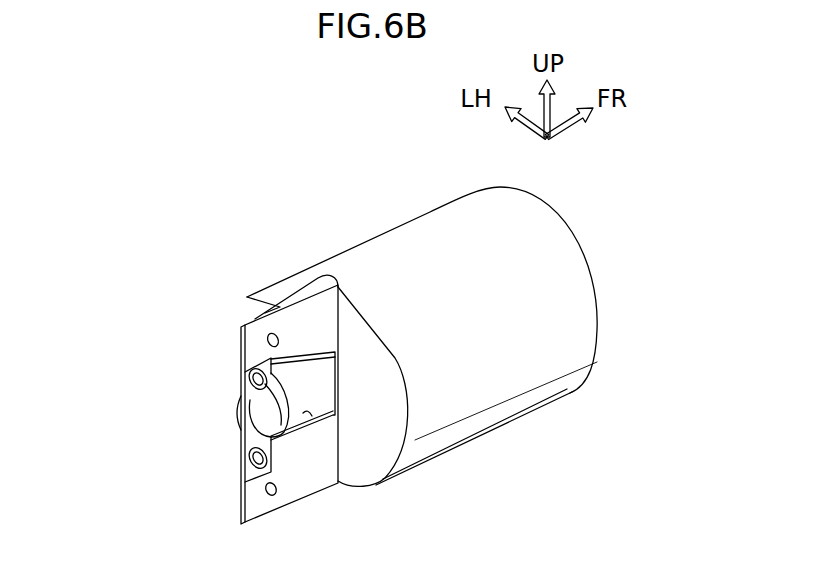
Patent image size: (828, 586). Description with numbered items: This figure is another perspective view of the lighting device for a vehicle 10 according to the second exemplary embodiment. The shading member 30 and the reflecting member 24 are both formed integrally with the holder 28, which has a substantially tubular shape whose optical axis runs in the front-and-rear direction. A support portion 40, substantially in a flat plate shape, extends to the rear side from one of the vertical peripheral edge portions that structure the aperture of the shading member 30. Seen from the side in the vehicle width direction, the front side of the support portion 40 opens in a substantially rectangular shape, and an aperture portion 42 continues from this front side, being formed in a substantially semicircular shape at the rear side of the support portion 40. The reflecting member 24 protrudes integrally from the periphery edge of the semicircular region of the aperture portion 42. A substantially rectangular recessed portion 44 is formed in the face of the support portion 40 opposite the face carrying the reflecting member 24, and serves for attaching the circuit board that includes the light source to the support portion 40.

The lighting device for a vehicle 10 is at (403, 212).
The reflecting member 24 is at (235, 405).
The holder 28 is at (500, 377).
The shading member 30 is at (367, 463).
The support portion 40 is at (238, 325).
The aperture portion 42 is at (307, 420).
The recessed portion 44 is at (238, 452).